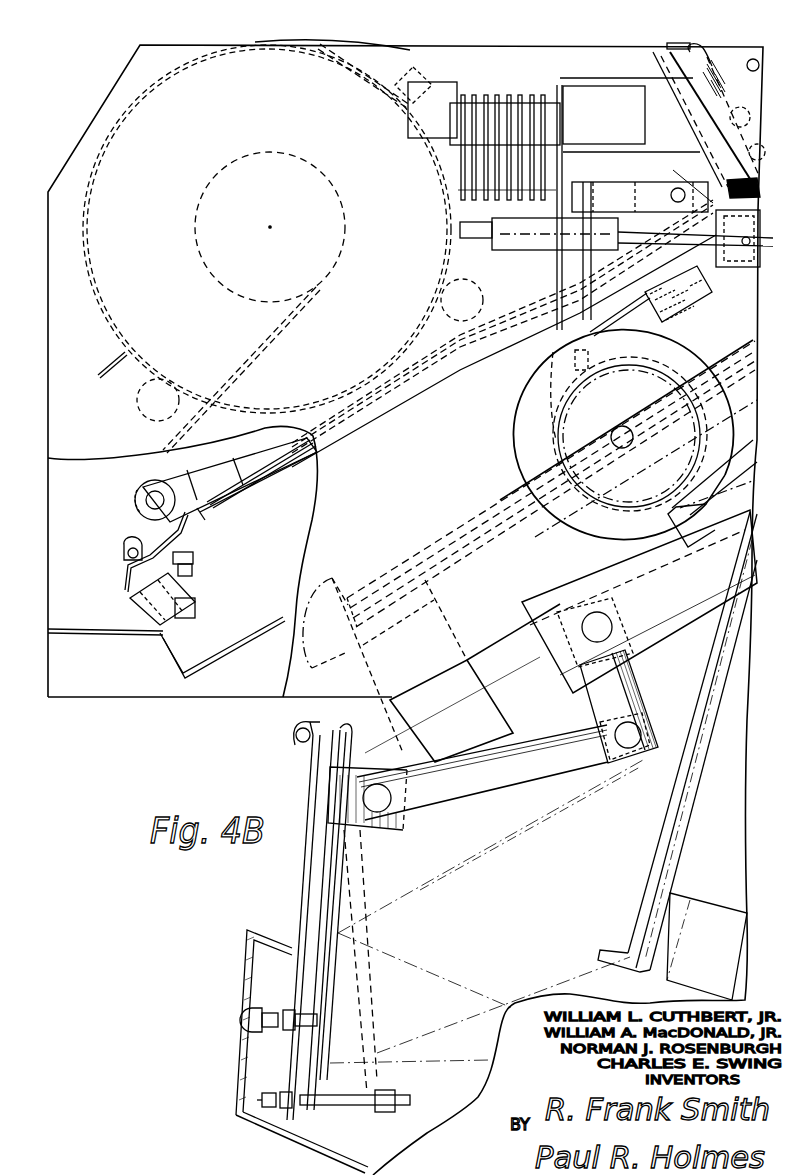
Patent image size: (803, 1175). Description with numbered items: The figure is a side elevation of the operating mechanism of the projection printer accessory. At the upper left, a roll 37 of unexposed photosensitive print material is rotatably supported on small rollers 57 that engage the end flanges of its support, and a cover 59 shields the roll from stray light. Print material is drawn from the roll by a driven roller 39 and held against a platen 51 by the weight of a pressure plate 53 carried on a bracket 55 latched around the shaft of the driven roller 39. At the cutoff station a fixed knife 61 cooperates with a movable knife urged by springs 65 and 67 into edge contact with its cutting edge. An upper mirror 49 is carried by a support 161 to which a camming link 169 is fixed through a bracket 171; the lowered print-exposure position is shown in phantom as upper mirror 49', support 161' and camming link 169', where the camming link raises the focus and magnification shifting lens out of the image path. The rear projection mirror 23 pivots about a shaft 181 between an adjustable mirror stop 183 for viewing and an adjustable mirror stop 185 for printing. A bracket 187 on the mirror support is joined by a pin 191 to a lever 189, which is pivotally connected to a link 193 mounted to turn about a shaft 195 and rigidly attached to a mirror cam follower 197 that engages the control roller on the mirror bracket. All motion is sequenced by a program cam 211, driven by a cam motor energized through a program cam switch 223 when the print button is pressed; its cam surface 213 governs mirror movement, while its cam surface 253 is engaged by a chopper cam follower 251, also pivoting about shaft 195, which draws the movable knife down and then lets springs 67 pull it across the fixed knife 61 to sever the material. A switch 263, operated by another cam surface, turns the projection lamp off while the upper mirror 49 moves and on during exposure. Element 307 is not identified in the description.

The rear projection mirror 23 is at (330, 992).
The roll of unexposed photosensitive print material 37 is at (214, 75).
The driven roller 39 is at (142, 508).
The upper mirror 49 is at (551, 484).
The upper mirror (lower position) 49' is at (677, 742).
The platen 51 is at (262, 490).
The pressure plate 53 is at (260, 466).
The bracket 55 is at (205, 475).
The small rollers 57 is at (140, 402).
The cover 59 is at (130, 100).
The fixed knife 61 is at (715, 128).
The spring 65 is at (757, 186).
The spring 67 is at (715, 62).
The support 161 is at (504, 386).
The support (lower position) 161' is at (701, 755).
The camming link 169 is at (462, 683).
The camming link (lower position) 169' is at (727, 934).
The bracket 171 is at (385, 708).
The shaft 181 is at (296, 736).
The mirror stop 183 is at (250, 1019).
The mirror stop 185 is at (348, 1106).
The bracket 187 is at (388, 830).
The lever 189 is at (465, 780).
The pin 191 is at (385, 800).
The link 193 is at (640, 688).
The shaft 195 is at (612, 618).
The mirror cam follower 197 is at (735, 490).
The program cam 211 is at (690, 345).
The cam surface 213 is at (740, 395).
The program cam switch 223 is at (490, 88).
The chopper cam follower 251 is at (565, 585).
The cam surface 253 is at (745, 445).
The switch 263 is at (718, 292).
The block 307 is at (545, 250).